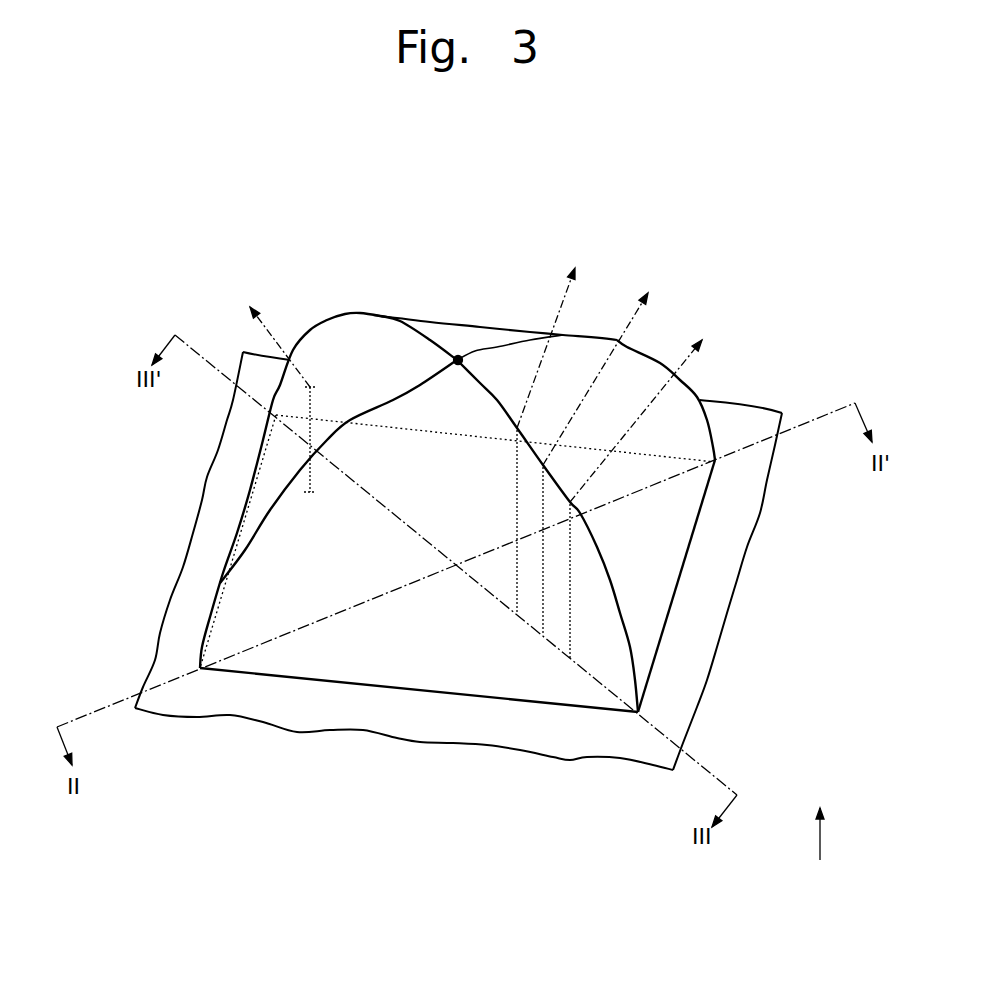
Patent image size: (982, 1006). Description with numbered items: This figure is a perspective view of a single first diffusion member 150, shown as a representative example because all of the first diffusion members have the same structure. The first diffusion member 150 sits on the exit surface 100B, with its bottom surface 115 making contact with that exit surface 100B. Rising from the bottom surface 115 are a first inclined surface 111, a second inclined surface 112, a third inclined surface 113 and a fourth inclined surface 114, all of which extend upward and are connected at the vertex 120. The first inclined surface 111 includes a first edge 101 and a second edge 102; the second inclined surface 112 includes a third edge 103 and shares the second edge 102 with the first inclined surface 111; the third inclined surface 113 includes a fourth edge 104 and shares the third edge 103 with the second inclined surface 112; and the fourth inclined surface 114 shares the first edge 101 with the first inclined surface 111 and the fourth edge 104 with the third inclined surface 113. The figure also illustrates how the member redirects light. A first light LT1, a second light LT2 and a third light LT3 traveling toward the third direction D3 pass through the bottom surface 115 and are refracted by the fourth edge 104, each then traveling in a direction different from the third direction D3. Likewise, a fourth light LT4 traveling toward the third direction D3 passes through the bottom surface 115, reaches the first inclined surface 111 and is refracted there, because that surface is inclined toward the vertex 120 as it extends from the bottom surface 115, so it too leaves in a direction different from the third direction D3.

The first diffusion member 150 is at (694, 237).
The exit surface 100B is at (582, 757).
The first edge 101 is at (278, 483).
The second edge 102 is at (402, 323).
The third edge 103 is at (697, 390).
The fourth edge 104 is at (613, 602).
The first inclined surface 111 is at (355, 358).
The second inclined surface 112 is at (485, 342).
The third inclined surface 113 is at (652, 520).
The fourth inclined surface 114 is at (420, 632).
The bottom surface 115 is at (500, 700).
The vertex 120 is at (457, 352).
The first light LT1 is at (553, 425).
The second light LT2 is at (605, 447).
The third light LT3 is at (645, 482).
The fourth light LT4 is at (271, 383).
The third direction D3 is at (818, 818).